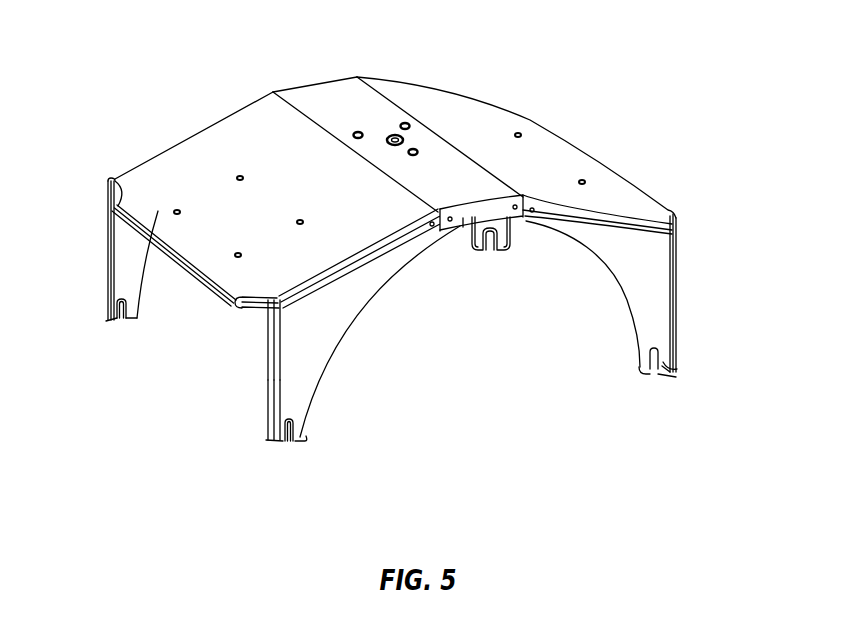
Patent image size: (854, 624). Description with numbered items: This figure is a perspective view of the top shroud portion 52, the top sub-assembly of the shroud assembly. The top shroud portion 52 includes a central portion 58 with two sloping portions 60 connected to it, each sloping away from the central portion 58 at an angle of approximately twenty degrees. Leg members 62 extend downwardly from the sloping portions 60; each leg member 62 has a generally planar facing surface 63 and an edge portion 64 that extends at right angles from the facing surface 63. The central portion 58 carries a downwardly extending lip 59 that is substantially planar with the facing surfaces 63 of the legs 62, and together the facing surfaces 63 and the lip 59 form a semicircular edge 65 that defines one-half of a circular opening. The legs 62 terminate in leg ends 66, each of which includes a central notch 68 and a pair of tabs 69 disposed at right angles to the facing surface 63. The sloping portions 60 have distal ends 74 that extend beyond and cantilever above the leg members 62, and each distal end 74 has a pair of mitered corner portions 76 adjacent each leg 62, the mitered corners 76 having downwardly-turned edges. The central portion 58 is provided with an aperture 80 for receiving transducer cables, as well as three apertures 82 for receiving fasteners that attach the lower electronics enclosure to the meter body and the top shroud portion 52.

The top shroud portion 52 is at (641, 171).
The central portion 58 is at (323, 97).
The downwardly extending lip 59 is at (462, 243).
The sloping portion 60 is at (218, 141).
The leg member 62 is at (120, 245).
The facing surface 63 is at (345, 290).
The edge portion 64 is at (265, 418).
The semicircular edge 65 is at (554, 229).
The leg end 66 is at (668, 364).
The central notch 68 is at (655, 379).
The tab 69 is at (641, 377).
The distal end 74 is at (160, 208).
The mitered corner portion 76 is at (116, 181).
The aperture 80 is at (392, 135).
The aperture 82 is at (358, 131).